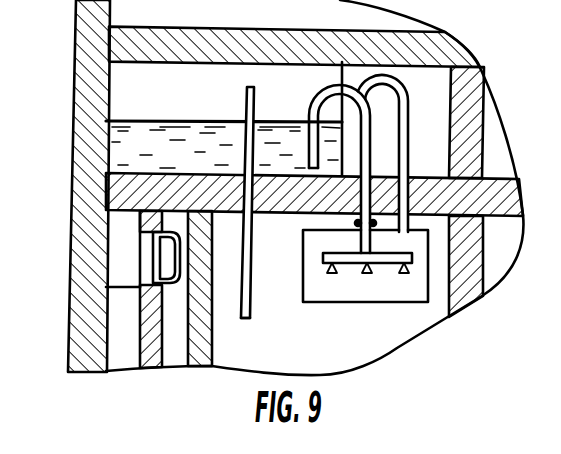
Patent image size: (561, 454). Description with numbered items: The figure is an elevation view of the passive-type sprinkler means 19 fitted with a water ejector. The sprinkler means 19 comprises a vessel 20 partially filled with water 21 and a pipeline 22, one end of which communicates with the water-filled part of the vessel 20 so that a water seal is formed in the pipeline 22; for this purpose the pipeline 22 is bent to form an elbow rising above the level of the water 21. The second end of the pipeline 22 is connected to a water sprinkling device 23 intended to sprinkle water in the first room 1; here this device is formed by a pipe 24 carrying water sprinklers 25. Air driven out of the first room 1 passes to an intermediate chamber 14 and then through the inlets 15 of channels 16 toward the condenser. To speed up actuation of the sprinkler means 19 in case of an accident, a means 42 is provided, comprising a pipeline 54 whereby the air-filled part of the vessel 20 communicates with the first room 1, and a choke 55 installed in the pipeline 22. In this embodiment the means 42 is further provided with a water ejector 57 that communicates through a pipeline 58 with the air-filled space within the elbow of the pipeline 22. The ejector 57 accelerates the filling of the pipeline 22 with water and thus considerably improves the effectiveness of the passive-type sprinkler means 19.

The first room 1 is at (438, 297).
The intermediate chamber 14 is at (174, 363).
The inlets of channels 15 is at (120, 285).
The channels 16 is at (127, 363).
The passive-type sprinkler means 19 is at (128, 86).
The vessel 20 is at (106, 159).
The water 21 is at (112, 143).
The pipeline 22 is at (363, 158).
The water sprinkling device 23 is at (390, 284).
The pipe 24 is at (407, 259).
The water sprinklers 25 is at (369, 274).
The means to speed up actuation 42 is at (266, 103).
The pipeline 54 is at (251, 316).
The choke 55 is at (356, 223).
The water ejector 57 is at (430, 281).
The pipeline 58 is at (408, 116).